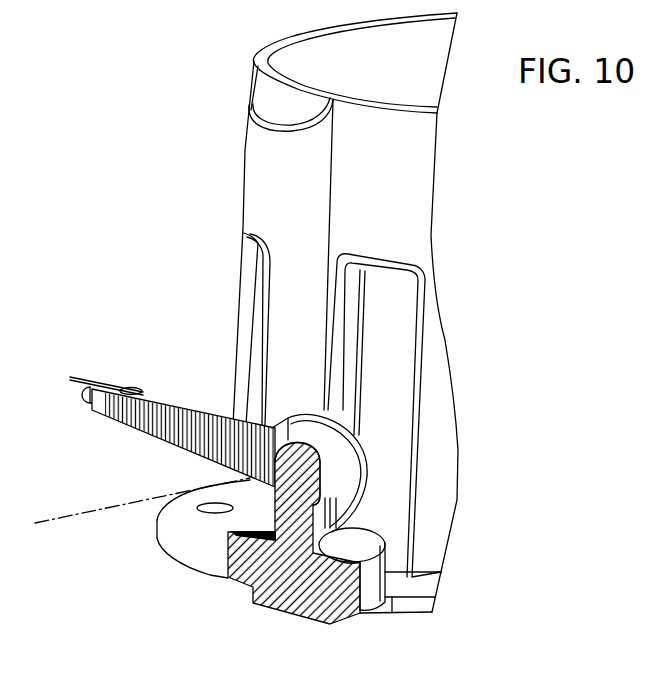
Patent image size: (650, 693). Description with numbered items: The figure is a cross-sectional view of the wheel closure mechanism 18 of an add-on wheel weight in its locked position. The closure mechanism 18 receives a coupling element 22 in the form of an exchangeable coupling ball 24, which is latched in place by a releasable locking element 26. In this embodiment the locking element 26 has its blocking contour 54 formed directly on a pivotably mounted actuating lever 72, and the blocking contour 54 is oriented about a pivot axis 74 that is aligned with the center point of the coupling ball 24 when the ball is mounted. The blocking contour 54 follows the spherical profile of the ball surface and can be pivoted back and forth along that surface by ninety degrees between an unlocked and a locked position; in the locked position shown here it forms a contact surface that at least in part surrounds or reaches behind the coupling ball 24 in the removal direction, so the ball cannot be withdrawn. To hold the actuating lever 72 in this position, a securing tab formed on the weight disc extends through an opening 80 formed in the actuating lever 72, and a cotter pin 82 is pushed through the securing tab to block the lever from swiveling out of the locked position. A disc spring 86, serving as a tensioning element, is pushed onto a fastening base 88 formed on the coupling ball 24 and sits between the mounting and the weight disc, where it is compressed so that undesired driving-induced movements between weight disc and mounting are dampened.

The closure mechanism 18 is at (373, 304).
The coupling element 22 is at (250, 503).
The coupling ball 24 is at (327, 481).
The locking element 26 is at (170, 382).
The blocking contour 54 is at (272, 500).
The actuating lever 72 is at (177, 425).
The pivot axis 74 is at (82, 521).
The opening 80 is at (100, 398).
The cotter pin 82 is at (128, 388).
The disc spring 86 is at (362, 542).
The fastening base 88 is at (257, 594).